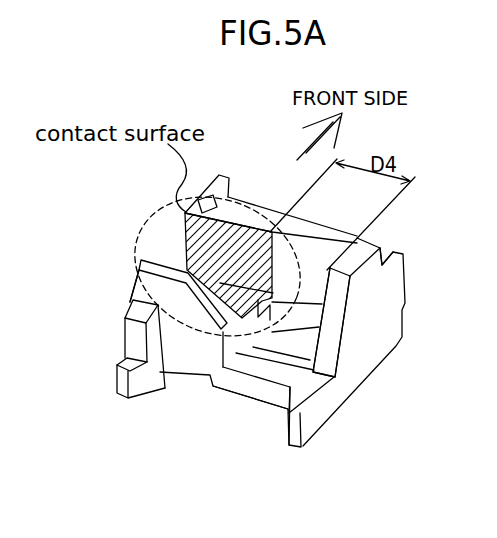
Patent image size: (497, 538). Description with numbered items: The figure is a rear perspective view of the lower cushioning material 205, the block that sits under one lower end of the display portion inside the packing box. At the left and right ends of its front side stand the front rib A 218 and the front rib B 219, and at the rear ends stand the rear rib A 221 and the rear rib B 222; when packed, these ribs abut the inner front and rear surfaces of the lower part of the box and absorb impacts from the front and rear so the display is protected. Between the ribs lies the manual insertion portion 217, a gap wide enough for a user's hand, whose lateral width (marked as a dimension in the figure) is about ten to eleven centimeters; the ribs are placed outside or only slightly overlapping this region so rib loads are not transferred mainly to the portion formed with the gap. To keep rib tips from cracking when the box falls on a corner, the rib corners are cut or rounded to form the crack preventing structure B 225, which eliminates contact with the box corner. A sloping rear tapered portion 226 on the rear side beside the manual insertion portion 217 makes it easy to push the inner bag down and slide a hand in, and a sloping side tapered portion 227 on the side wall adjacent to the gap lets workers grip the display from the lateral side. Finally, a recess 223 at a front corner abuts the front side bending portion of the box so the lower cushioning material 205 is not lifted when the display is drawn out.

The lower cushioning material 205 is at (372, 470).
The manual insertion portion 217 is at (276, 360).
The front rib A 218 is at (220, 176).
The front rib B 219 is at (403, 254).
The rear rib A 221 is at (117, 366).
The rear rib B 222 is at (288, 414).
The recess 223 is at (380, 248).
The crack preventing structure B 225 is at (122, 400).
The rear tapered portion 226 is at (204, 298).
The side tapered portion 227 is at (332, 318).